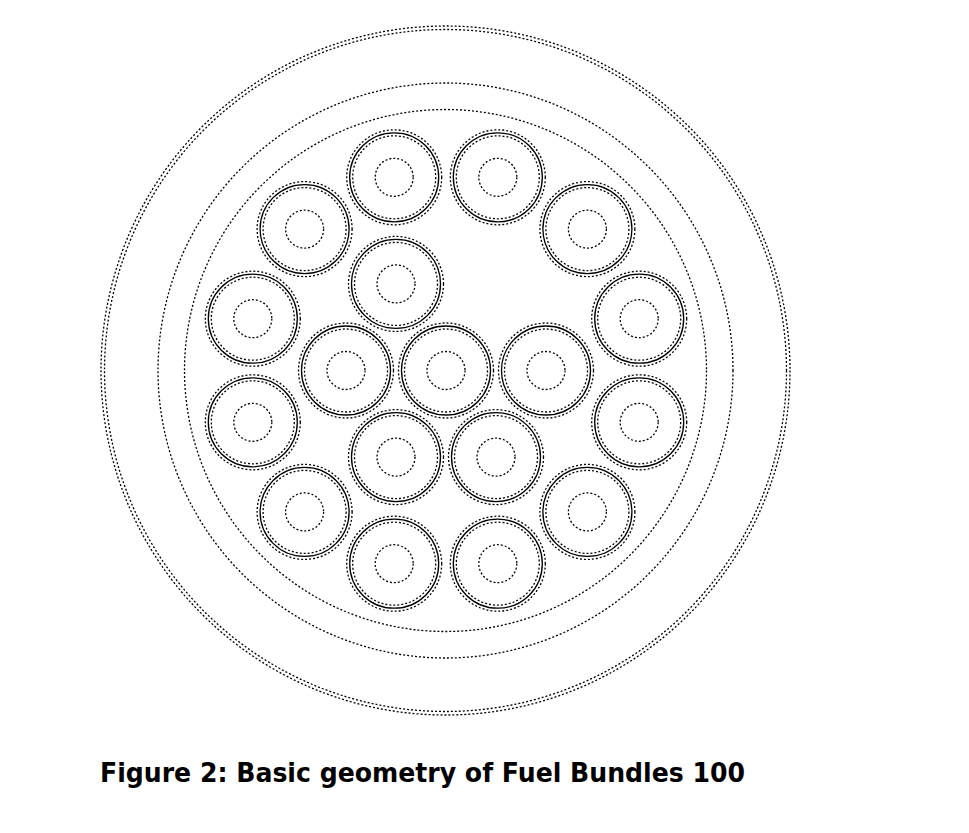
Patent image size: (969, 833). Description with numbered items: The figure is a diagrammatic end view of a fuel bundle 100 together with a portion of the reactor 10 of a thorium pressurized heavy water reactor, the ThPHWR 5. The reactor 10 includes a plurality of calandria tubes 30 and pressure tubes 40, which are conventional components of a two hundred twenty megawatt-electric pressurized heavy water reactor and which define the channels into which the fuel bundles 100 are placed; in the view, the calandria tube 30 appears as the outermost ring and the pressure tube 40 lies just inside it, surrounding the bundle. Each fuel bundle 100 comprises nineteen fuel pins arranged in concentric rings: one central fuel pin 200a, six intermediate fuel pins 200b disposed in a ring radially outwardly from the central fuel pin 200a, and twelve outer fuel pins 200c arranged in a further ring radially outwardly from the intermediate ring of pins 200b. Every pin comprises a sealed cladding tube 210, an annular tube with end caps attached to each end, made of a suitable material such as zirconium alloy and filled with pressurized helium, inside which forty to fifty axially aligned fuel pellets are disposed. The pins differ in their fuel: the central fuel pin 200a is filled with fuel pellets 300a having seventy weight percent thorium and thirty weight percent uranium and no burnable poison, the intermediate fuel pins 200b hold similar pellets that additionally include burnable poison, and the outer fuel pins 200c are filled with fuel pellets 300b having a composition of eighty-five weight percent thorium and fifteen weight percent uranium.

The ThPHWR 5 is at (246, 21).
The reactor 10 is at (481, 370).
The calandria tubes 30 is at (768, 247).
The pressure tubes 40 is at (728, 323).
The fuel bundle 100 is at (280, 157).
The central fuel pin 200a is at (386, 332).
The intermediate fuel pins 200b is at (561, 461).
The outer fuel pins 200c is at (683, 260).
The sealed cladding tube 210 is at (628, 195).
The fuel pellets 300a is at (428, 345).
The fuel pellets 300b is at (527, 157).